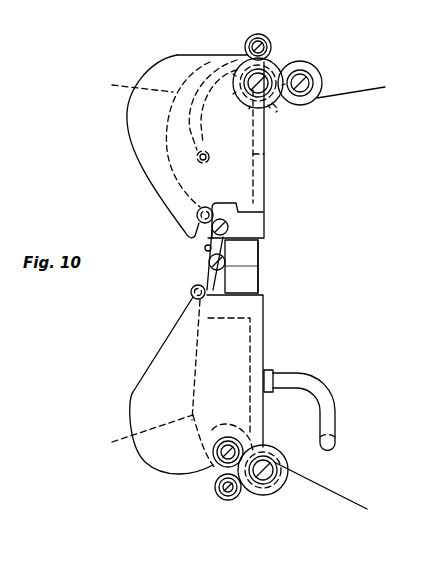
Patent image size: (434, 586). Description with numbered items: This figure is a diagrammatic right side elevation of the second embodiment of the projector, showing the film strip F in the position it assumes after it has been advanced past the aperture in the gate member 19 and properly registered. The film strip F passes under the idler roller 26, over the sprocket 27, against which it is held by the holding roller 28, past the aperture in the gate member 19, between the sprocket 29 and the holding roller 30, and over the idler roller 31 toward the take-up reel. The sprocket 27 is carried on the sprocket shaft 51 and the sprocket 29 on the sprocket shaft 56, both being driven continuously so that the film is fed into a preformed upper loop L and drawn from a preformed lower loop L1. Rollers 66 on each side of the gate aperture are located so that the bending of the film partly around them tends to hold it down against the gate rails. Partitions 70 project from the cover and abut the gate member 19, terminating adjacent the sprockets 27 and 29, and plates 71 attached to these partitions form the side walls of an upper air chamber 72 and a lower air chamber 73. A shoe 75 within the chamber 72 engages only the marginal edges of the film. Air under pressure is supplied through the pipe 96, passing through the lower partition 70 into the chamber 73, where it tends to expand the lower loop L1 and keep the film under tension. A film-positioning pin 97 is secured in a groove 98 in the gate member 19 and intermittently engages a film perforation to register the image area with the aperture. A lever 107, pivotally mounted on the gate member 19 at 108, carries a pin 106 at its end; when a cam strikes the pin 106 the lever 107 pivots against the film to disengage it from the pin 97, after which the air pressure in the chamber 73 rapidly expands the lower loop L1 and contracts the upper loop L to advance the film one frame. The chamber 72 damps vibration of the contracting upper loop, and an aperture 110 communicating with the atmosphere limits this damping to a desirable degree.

The gate member 19 is at (258, 265).
The idler roller 26 is at (317, 68).
The sprocket 27 is at (280, 64).
The holding roller 28 is at (247, 36).
The sprocket 29 is at (223, 467).
The holding roller 30 is at (237, 500).
The idler roller 31 is at (277, 487).
The sprocket shaft 51 is at (276, 112).
The sprocket shaft 56 is at (217, 470).
The rollers 66 is at (197, 223).
The partitions 70 is at (199, 264).
The plates 71 is at (146, 264).
The air chamber 72 is at (136, 168).
The air chamber 73 is at (130, 400).
The shoe 75 is at (200, 117).
The pipe 96 is at (320, 388).
The film-positioning pin 97 is at (209, 254).
The groove 98 is at (227, 260).
The pin 106 is at (227, 243).
The lever 107 is at (240, 237).
The pivot 108 is at (227, 225).
The aperture 110 is at (264, 154).
The upper loop L is at (101, 85).
The lower loop L1 is at (140, 432).
The film strip F is at (327, 485).